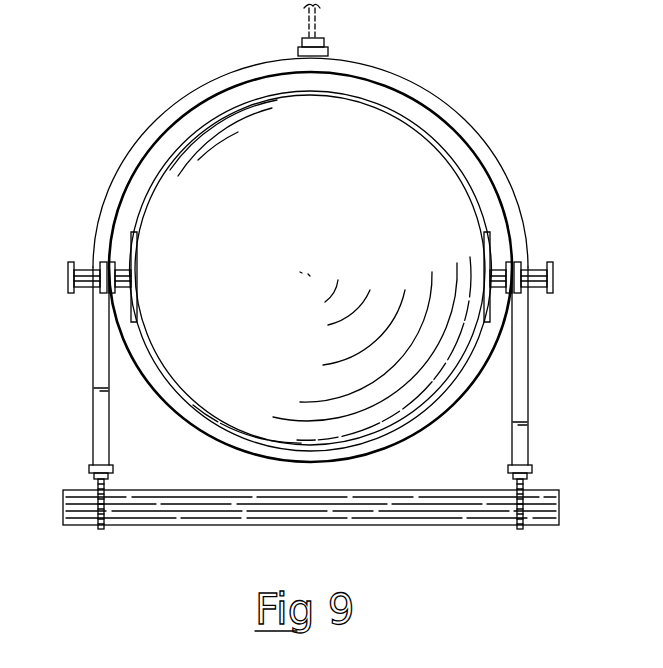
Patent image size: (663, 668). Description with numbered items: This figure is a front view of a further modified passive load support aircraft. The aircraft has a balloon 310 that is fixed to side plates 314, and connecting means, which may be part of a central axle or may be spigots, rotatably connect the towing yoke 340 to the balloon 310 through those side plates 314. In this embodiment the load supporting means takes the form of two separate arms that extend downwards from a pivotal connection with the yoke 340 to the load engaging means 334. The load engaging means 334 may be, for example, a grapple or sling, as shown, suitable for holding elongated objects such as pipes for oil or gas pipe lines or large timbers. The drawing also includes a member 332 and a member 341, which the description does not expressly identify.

The balloon 310 is at (455, 210).
The side plates 314 is at (495, 312).
The yoke 332 is at (517, 382).
The load engaging means 334 is at (528, 494).
The towing yoke 340 is at (495, 176).
The adjustment knob 341 is at (330, 44).